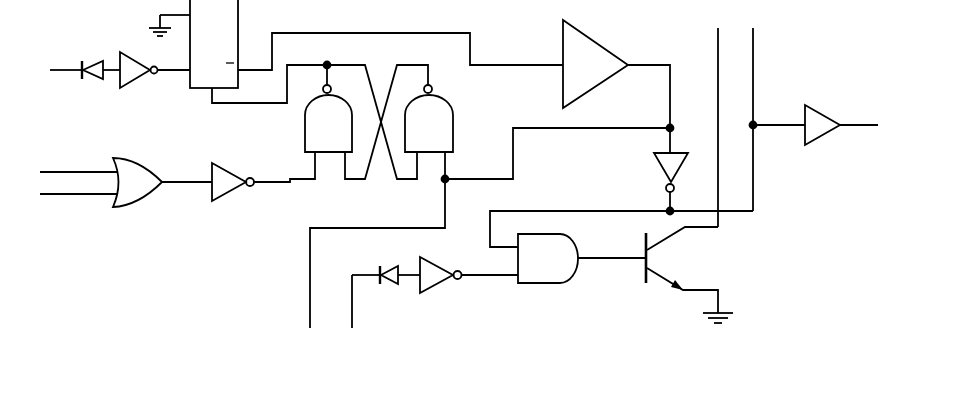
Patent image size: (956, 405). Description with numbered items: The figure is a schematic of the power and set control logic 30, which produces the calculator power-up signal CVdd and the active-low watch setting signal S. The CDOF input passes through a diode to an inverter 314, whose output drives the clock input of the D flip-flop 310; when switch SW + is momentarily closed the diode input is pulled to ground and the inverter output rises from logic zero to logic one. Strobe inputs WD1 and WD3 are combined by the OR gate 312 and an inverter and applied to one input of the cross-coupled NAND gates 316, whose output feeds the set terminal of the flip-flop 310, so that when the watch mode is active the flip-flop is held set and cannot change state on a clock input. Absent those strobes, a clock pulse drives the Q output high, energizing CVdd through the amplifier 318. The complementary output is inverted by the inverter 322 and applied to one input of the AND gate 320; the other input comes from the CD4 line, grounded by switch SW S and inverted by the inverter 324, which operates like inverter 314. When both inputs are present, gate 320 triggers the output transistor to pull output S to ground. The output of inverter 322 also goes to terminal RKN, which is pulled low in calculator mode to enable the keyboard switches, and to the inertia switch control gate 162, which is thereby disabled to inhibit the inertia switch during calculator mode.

The power and set control logic 30 is at (818, 196).
The D flip-flop 310 is at (239, 18).
The OR gate 312 is at (137, 211).
The inverter 314 is at (134, 89).
The cross-coupled NAND gates 316 is at (456, 103).
The amplifier 318 is at (607, 46).
The AND gate 320 is at (564, 285).
The inverter 322 is at (661, 167).
The inverter 324 is at (437, 291).
The inertia switch control gate 162 is at (753, 45).